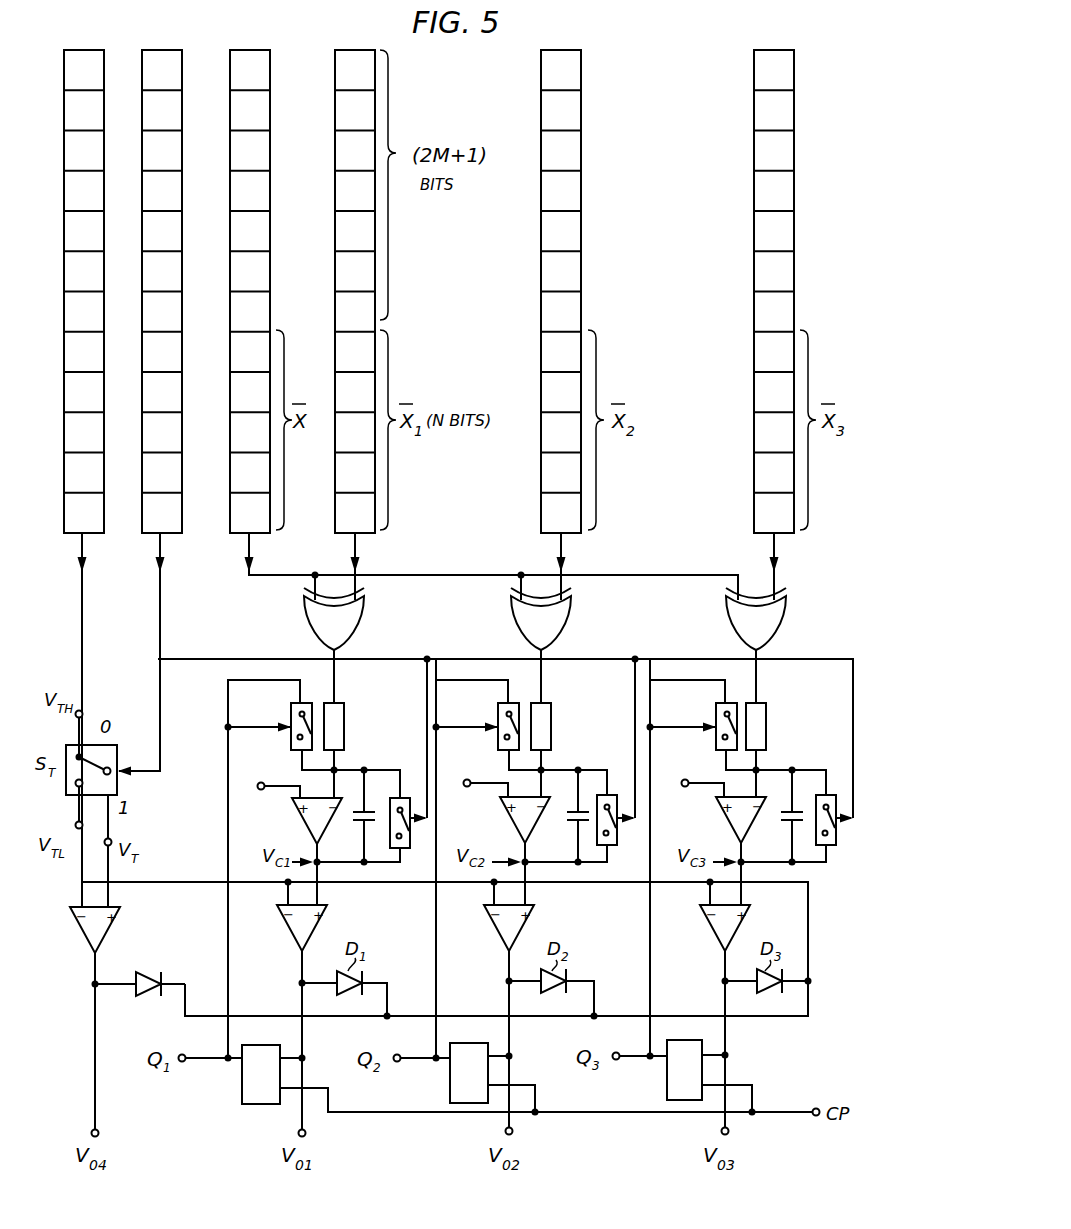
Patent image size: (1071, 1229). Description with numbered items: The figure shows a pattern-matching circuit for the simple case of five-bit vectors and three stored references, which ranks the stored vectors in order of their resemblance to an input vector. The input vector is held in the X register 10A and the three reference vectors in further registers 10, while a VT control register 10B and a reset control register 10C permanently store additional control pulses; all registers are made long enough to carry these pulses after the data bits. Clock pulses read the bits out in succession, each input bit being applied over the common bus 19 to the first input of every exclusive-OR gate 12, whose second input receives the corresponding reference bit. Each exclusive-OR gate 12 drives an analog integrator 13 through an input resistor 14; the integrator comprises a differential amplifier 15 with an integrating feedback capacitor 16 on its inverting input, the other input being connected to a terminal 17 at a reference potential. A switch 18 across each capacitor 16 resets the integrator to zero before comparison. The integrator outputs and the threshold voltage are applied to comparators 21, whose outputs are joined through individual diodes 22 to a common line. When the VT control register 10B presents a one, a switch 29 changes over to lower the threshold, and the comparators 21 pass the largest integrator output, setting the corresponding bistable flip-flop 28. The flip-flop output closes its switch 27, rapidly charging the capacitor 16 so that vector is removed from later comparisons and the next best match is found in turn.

The N-bit register 10 is at (388, 72).
The X register 10A is at (270, 90).
The VT control register 10B is at (183, 68).
The reset control register 10C is at (64, 118).
The exclusive-OR gate 12 is at (306, 623).
The analog integrator 13 is at (372, 760).
The input resistor 14 is at (344, 716).
The differential amplifier 15 is at (306, 826).
The integrating feedback capacitor 16 is at (355, 812).
The terminal 17 is at (261, 783).
The switch 18 is at (408, 798).
The common bus 19 is at (441, 575).
The comparator 21 is at (118, 922).
The diode 22 is at (141, 1000).
The switch 27 is at (311, 703).
The bistable flip-flop 28 is at (278, 1046).
The switch 29 is at (117, 787).